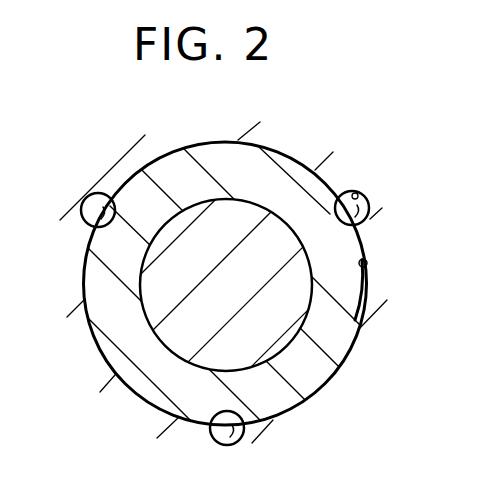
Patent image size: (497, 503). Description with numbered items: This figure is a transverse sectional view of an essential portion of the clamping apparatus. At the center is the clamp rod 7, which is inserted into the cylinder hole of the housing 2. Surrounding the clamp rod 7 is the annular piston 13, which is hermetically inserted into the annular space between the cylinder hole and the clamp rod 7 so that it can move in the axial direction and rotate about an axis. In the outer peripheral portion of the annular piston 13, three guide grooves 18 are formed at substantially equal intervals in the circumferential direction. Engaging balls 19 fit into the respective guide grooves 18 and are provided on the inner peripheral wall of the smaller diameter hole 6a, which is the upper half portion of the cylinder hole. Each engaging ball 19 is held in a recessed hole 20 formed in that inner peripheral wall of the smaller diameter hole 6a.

The housing 2 is at (284, 140).
The clamp rod 7 is at (301, 297).
The annular piston 13 is at (374, 294).
The guide grooves 18 is at (328, 212).
The engaging balls 19 is at (84, 199).
The recessed hole 20 is at (358, 188).
The smaller diameter hole 6a is at (368, 263).